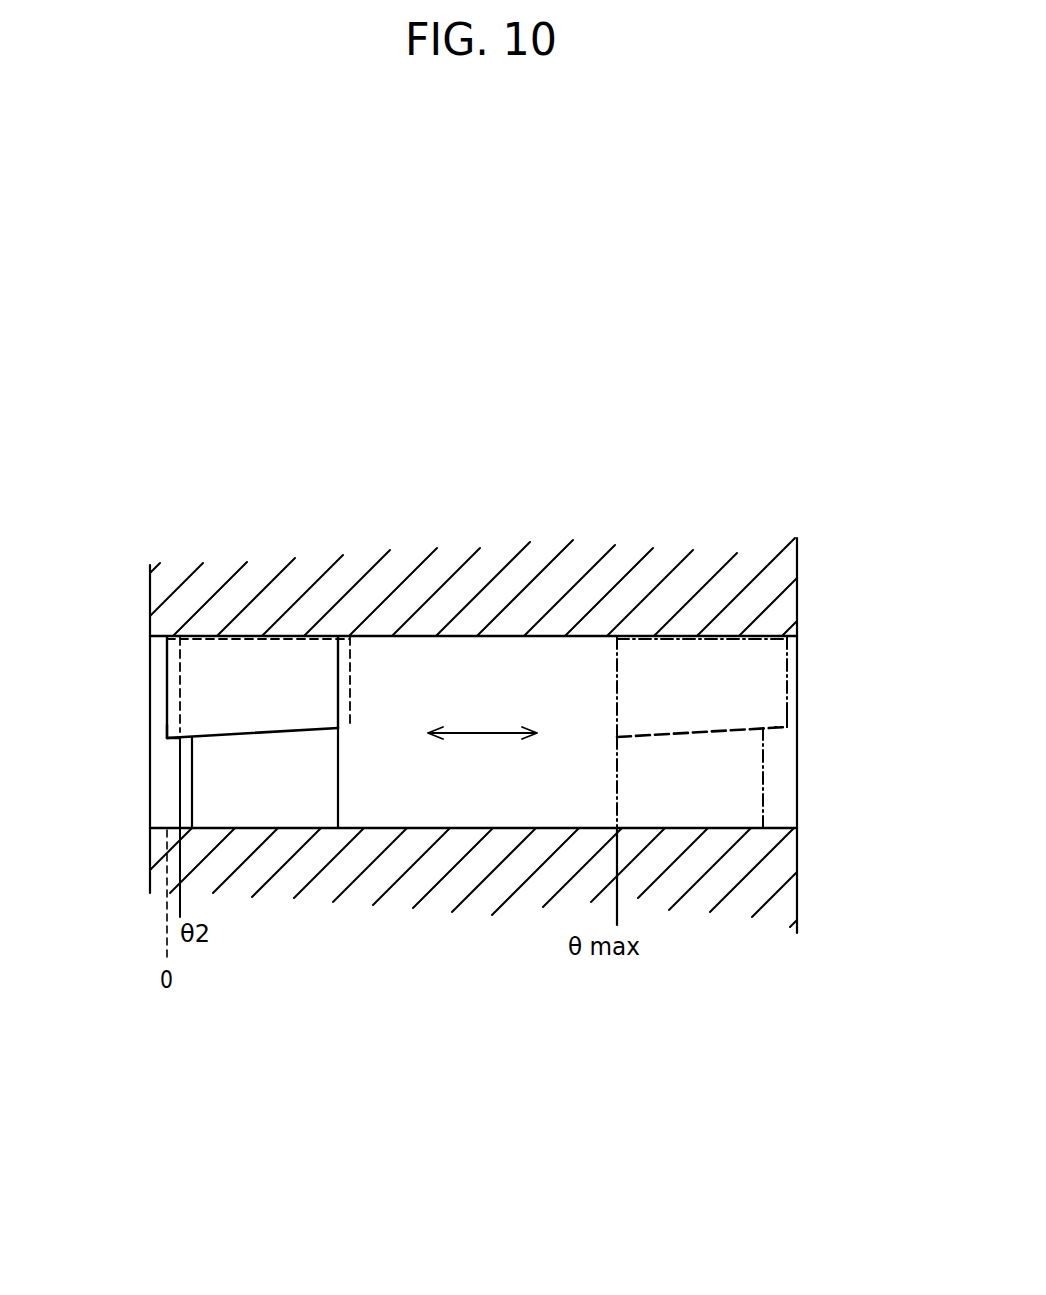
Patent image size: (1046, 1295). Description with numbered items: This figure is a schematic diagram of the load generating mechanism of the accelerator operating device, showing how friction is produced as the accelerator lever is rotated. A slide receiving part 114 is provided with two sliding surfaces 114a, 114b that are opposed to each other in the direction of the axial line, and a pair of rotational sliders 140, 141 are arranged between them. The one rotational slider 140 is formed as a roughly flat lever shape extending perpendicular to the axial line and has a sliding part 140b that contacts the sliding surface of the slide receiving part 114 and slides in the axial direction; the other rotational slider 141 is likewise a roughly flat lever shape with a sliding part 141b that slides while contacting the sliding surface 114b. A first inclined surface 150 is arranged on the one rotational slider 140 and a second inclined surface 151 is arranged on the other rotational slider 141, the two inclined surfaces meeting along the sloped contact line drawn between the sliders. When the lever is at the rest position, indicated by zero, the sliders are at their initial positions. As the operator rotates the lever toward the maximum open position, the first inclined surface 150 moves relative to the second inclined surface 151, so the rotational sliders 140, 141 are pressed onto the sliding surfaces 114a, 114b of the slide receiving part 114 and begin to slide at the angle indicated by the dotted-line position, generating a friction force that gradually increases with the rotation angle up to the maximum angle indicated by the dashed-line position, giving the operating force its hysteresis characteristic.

The slide receiving part 114 is at (473, 741).
The sliding surface 114a is at (412, 636).
The sliding surface 114b is at (533, 828).
The rotational slider 140 is at (477, 584).
The sliding part 140b is at (210, 653).
The rotational slider 141 is at (477, 885).
The sliding part 141b is at (278, 802).
The first inclined surface 150 is at (176, 738).
The second inclined surface 151 is at (275, 735).